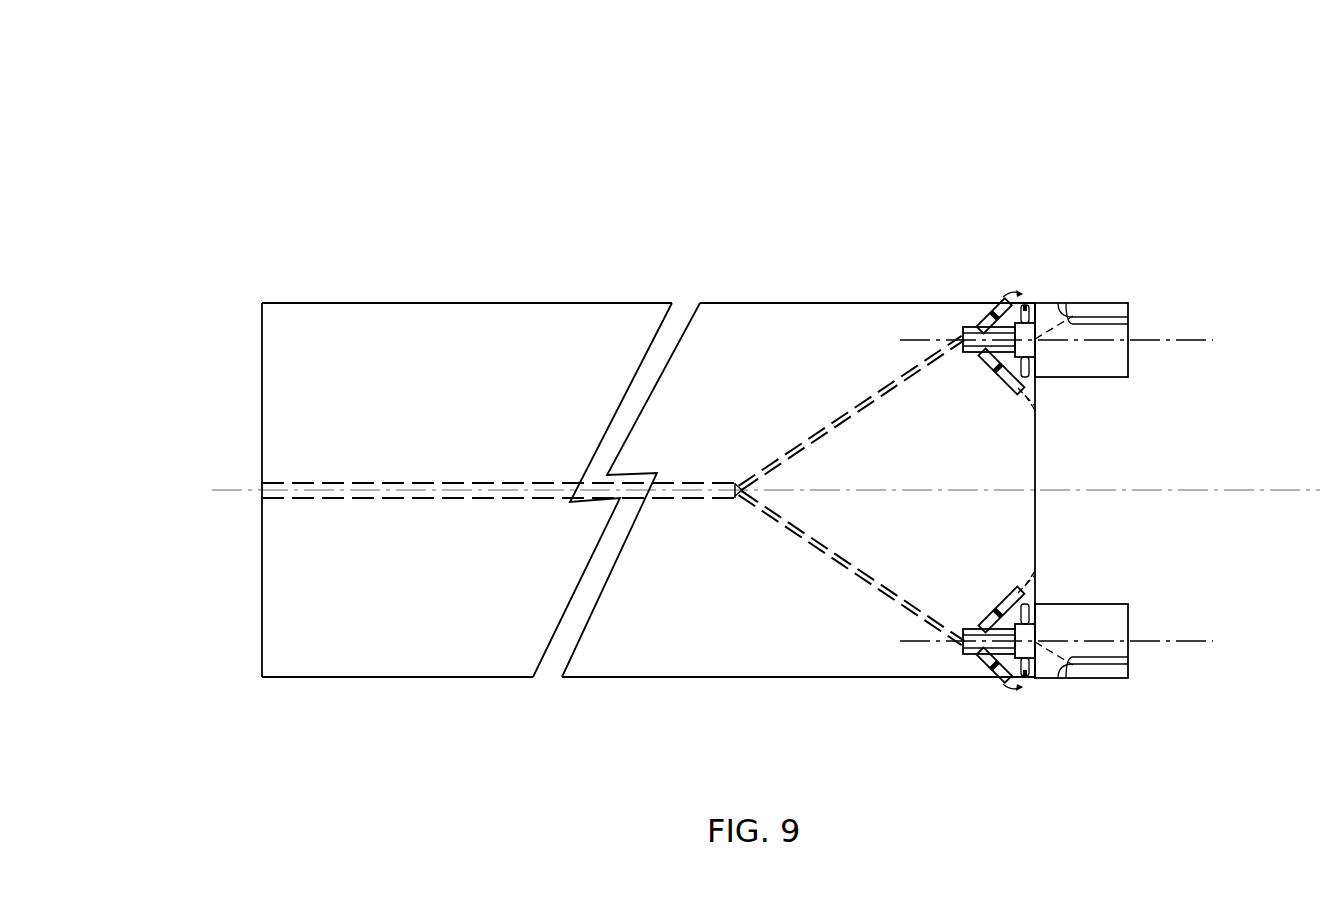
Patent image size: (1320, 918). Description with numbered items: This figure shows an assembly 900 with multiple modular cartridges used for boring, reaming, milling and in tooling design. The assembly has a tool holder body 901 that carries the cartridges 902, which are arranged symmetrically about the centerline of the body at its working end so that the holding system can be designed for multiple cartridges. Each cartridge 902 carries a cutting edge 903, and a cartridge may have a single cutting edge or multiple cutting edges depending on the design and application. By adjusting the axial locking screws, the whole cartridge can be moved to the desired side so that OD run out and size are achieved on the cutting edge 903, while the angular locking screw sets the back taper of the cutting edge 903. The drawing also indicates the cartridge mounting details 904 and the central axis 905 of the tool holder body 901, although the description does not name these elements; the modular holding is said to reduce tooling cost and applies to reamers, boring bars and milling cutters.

The laser system 900 is at (766, 383).
The tool holder body 901 is at (648, 424).
The cartridges 902 is at (1105, 458).
The cutting edge 903 is at (1101, 470).
The nozzle assembly 904 is at (954, 457).
The beam 905 is at (613, 538).